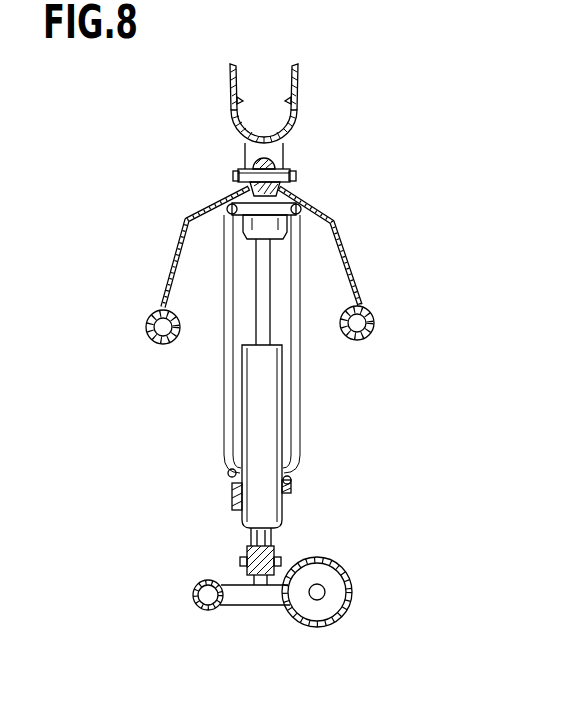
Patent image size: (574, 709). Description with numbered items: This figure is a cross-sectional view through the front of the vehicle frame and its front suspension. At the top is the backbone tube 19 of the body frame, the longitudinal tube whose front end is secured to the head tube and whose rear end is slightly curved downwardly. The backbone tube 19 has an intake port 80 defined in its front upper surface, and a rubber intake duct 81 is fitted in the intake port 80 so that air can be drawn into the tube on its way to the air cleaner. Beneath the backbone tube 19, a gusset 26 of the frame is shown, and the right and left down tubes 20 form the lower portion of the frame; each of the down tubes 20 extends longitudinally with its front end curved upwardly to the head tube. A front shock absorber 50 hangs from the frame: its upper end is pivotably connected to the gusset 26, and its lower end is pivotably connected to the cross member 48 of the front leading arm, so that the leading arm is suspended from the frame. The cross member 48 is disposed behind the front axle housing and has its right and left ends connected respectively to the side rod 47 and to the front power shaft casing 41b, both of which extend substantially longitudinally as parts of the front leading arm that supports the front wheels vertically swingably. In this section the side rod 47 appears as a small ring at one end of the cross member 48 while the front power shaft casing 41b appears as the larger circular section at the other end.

The intake port 80 is at (262, 103).
The rubber intake duct 81 is at (236, 80).
The backbone tube 19 is at (240, 107).
The gusset 26 is at (176, 250).
The down tubes 20 is at (160, 345).
The front shock absorber 50 is at (248, 412).
The side rod 47 is at (204, 581).
The cross member 48 is at (257, 606).
The front power shaft casing 41b is at (346, 574).